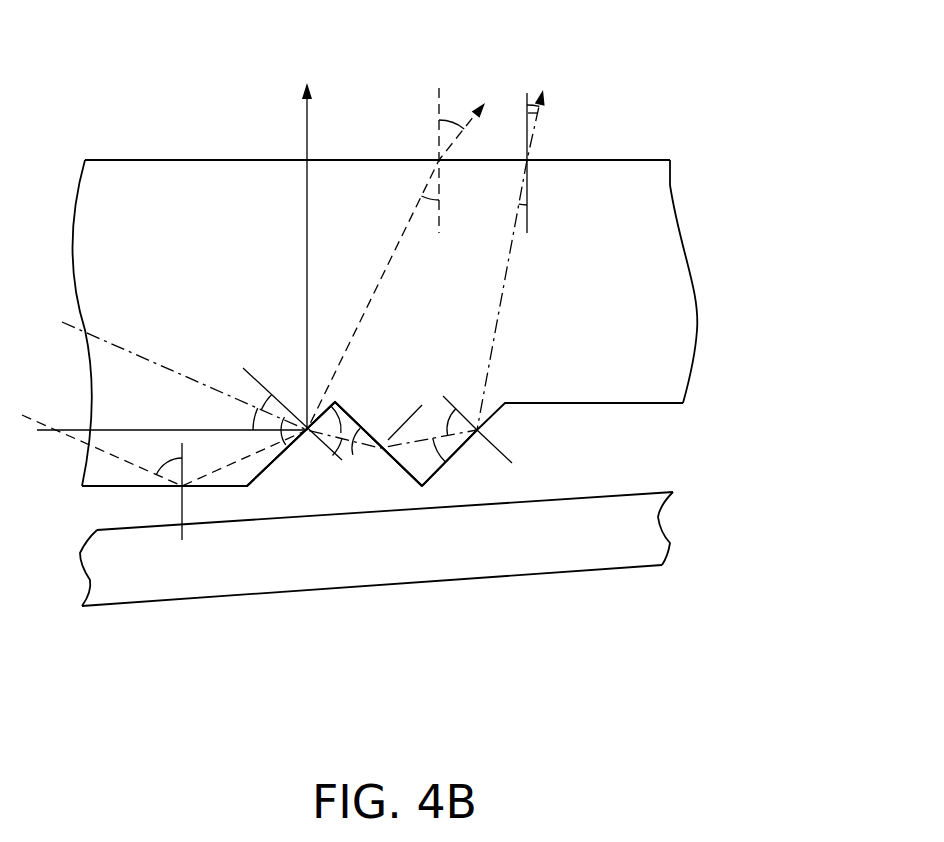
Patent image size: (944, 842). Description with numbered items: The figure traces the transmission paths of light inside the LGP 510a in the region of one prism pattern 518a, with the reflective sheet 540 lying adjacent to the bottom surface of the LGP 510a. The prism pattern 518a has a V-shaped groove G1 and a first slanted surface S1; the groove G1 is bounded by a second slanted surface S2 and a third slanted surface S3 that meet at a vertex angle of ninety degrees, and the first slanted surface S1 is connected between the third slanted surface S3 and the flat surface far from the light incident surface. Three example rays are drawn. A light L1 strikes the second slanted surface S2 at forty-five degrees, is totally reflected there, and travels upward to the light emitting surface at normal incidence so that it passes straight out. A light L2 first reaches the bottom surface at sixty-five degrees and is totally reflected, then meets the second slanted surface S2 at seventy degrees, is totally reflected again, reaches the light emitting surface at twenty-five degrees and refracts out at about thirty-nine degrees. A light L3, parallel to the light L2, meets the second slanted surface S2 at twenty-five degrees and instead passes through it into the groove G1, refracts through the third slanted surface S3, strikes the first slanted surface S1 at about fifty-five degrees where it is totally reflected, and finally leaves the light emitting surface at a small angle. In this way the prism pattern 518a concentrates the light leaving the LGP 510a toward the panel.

The LGP 510a is at (667, 293).
The reflective sheet 540 is at (645, 527).
The prism pattern 518a is at (373, 562).
The first slanted surface S1 is at (460, 463).
The second slanted surface S2 is at (285, 470).
The third slanted surface S3 is at (392, 475).
The groove G1 is at (334, 542).
The light L1 is at (308, 242).
The light L2 is at (262, 304).
The light L3 is at (314, 255).